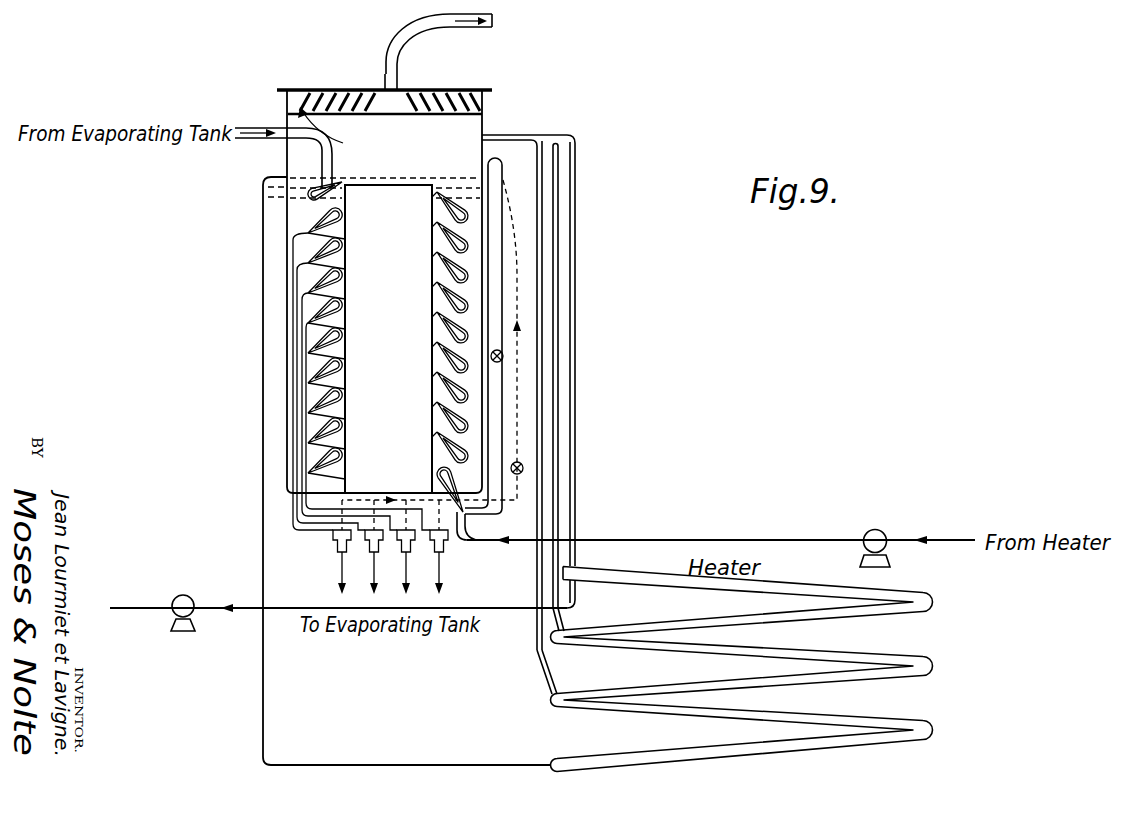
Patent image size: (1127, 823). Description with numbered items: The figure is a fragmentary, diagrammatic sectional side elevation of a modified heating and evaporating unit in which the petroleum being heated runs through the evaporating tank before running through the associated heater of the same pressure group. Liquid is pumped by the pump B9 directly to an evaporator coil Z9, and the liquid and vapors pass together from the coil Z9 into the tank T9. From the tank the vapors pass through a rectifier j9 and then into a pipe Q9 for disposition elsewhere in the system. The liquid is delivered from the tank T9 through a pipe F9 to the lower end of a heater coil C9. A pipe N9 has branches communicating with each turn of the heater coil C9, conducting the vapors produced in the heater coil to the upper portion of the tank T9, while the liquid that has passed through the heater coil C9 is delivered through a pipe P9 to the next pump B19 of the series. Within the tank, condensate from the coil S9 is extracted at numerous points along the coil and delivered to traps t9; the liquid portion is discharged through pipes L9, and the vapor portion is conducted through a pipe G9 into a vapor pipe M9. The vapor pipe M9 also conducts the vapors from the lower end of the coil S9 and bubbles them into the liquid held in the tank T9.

The pipe Q9 is at (389, 47).
The rectifier j9 is at (440, 90).
The tank T9 is at (384, 291).
The evaporator coil Z9 is at (446, 191).
The pipe N9 is at (518, 135).
The vapor pipe M9 is at (503, 182).
The coil S9 is at (433, 259).
The pipe F9 is at (263, 352).
The pipe G9 is at (522, 404).
The pipe P9 is at (490, 606).
The traps t9 is at (324, 548).
The pipes L9 is at (324, 576).
The pump B19 is at (185, 595).
The pump B9 is at (876, 534).
The heater coil C9 is at (758, 748).